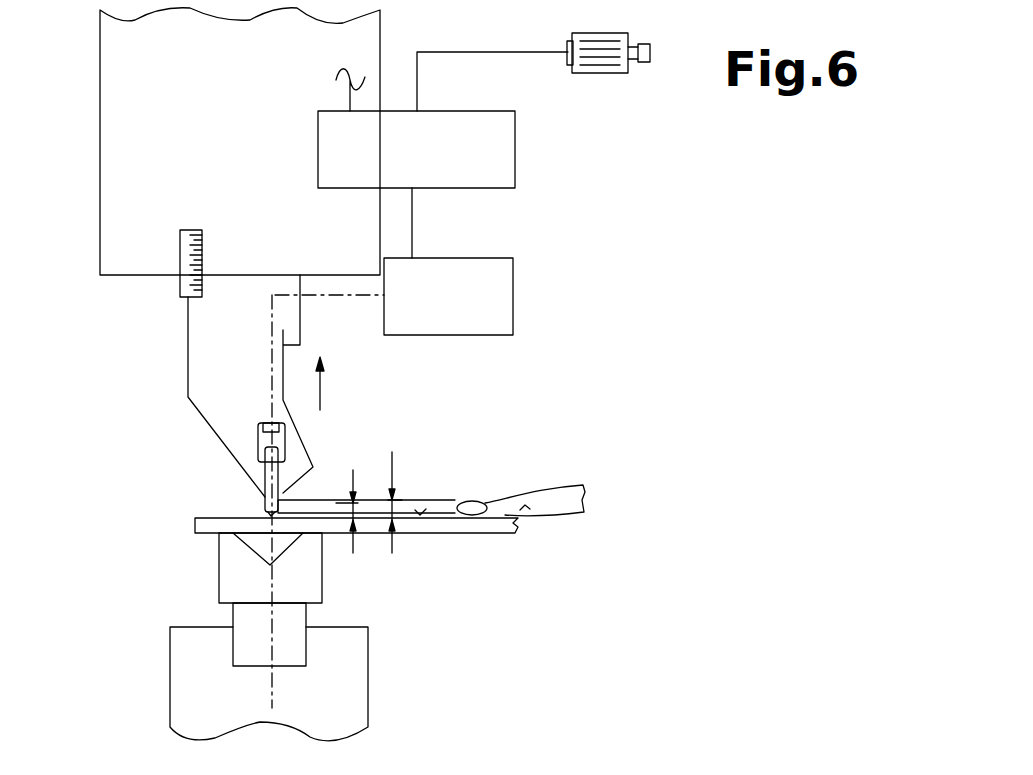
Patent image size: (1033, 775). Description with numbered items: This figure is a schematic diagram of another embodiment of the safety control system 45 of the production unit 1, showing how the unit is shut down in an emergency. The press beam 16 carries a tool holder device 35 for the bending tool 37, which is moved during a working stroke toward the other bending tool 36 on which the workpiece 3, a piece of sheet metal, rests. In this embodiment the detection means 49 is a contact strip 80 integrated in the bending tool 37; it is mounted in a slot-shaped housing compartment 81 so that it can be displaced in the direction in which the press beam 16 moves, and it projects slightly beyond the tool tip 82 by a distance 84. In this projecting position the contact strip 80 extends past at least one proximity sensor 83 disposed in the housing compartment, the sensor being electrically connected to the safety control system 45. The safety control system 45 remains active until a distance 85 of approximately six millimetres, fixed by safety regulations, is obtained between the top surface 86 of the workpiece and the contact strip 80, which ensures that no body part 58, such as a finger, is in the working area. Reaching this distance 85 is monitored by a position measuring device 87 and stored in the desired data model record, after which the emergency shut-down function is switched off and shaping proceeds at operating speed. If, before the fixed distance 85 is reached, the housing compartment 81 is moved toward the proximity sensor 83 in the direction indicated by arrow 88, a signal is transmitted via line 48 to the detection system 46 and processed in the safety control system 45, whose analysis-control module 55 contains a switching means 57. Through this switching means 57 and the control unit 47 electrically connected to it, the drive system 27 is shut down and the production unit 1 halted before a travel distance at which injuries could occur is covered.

The production unit 1 is at (706, 245).
The workpiece 3 is at (517, 529).
The press beam 16 is at (135, 100).
The drive system 27 is at (545, 33).
The tool holder device 35 is at (293, 325).
The bending tool 36 is at (303, 582).
The bending tool 37 is at (270, 398).
The safety control system 45 is at (548, 337).
The detection system 46 is at (418, 317).
The control unit 47 is at (343, 148).
The line 48 is at (352, 292).
The detection means 49 is at (556, 254).
The analysis-control module 55 is at (548, 294).
The switching means 57 is at (480, 293).
The body part 58 is at (585, 497).
The contact strip 80 is at (264, 476).
The housing compartment 81 is at (292, 444).
The tool tip 82 is at (265, 500).
The proximity sensor 83 is at (258, 432).
The distance 84 is at (400, 508).
The distance 85 is at (371, 488).
The top surface 86 is at (463, 502).
The position measuring device 87 is at (180, 283).
The arrow 88 is at (323, 404).